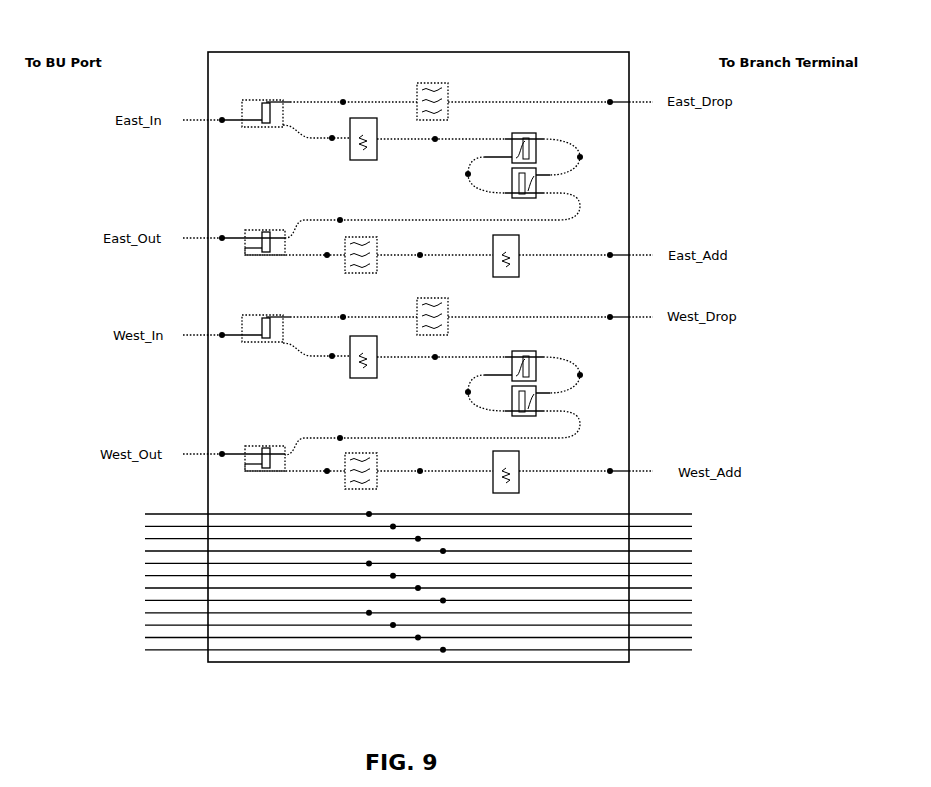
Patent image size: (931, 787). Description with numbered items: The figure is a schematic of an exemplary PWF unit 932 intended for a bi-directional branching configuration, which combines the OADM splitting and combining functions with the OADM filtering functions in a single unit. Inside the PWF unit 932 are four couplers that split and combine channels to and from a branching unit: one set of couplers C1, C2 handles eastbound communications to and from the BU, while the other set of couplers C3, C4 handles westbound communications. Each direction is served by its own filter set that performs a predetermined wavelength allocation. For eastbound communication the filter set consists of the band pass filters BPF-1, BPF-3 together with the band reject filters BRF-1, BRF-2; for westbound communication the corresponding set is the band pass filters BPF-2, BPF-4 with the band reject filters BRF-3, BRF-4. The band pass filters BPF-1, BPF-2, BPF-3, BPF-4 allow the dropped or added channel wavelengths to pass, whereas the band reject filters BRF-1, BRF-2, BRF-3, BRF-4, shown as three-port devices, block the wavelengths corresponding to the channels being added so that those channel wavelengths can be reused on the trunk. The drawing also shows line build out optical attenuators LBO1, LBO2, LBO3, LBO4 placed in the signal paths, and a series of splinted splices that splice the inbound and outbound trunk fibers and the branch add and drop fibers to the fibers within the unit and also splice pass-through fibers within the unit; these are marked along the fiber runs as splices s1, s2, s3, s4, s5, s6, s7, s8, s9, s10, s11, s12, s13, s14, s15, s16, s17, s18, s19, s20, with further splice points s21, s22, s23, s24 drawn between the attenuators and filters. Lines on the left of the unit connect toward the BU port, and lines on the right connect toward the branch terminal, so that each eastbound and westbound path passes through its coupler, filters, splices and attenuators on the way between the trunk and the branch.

The PWF unit 932 is at (348, 52).
The coupler C1 is at (264, 106).
The coupler C2 is at (266, 232).
The coupler C3 is at (264, 321).
The coupler C4 is at (266, 448).
The band pass filter BPF-1 is at (431, 92).
The band pass filter BPF-2 is at (431, 307).
The band pass filter BPF-3 is at (361, 265).
The band pass filter BPF-4 is at (361, 481).
The band reject filter BRF-1 is at (515, 139).
The band reject filter BRF-2 is at (525, 189).
The band reject filter BRF-3 is at (515, 358).
The band reject filter BRF-4 is at (525, 408).
The line build out optical attenuator LBO1 is at (361, 147).
The line build out optical attenuator LBO2 is at (502, 265).
The line build out optical attenuator LBO3 is at (361, 365).
The line build out optical attenuator LBO4 is at (502, 481).
The splinted splice s1 is at (222, 126).
The splinted splice s2 is at (353, 95).
The splinted splice s3 is at (550, 94).
The splinted splice s4 is at (316, 131).
The splinted splice s5 is at (570, 157).
The splinted splice s6 is at (476, 175).
The splinted splice s7 is at (432, 215).
The splinted splice s8 is at (234, 231).
The splinted splice s9 is at (295, 260).
The splinted splice s10 is at (586, 247).
The splinted splice s11 is at (222, 341).
The splinted splice s12 is at (353, 310).
The splinted splice s13 is at (550, 309).
The splinted splice s14 is at (316, 349).
The splinted splice s15 is at (574, 375).
The splinted splice s16 is at (473, 393).
The splinted splice s17 is at (432, 433).
The splinted splice s18 is at (234, 447).
The splinted splice s19 is at (295, 476).
The splinted splice s20 is at (586, 463).
The signal path node s21 is at (441, 146).
The signal path node s22 is at (435, 247).
The signal path node s23 is at (441, 364).
The signal path node s24 is at (435, 463).